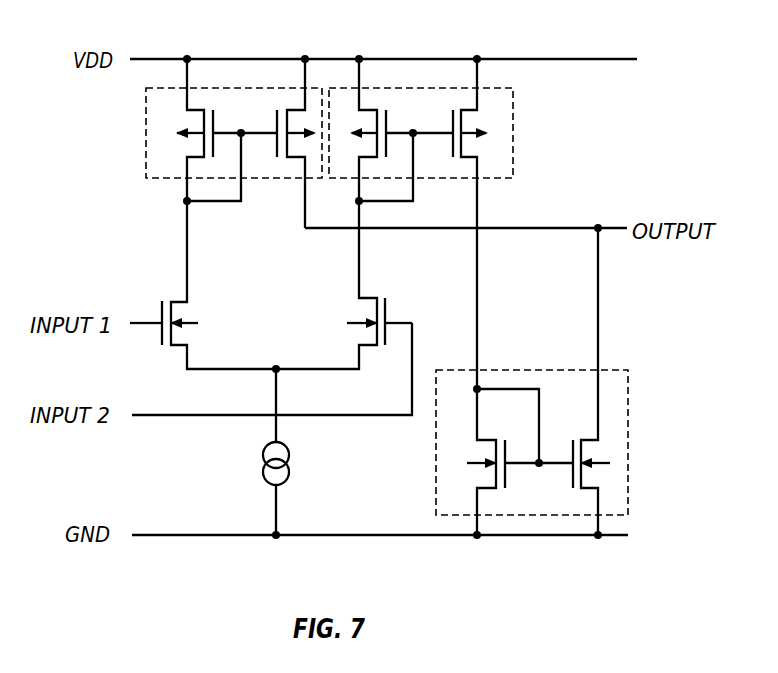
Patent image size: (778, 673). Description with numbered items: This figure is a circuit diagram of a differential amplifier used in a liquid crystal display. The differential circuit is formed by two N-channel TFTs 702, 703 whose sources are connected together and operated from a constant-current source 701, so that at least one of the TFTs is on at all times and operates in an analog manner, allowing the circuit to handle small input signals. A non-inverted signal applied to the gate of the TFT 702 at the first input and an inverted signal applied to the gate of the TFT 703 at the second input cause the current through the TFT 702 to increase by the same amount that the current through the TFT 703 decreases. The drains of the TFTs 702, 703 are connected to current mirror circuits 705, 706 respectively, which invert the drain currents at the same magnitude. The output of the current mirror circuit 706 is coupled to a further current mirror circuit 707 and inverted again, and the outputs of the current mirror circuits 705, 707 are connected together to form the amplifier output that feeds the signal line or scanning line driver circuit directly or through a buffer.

The constant-current source 701 is at (265, 485).
The N-channel TFT 702 is at (202, 317).
The N-channel TFT 703 is at (342, 328).
The current mirror circuit 705 is at (284, 102).
The current mirror circuit 706 is at (376, 102).
The current mirror circuit 707 is at (552, 500).